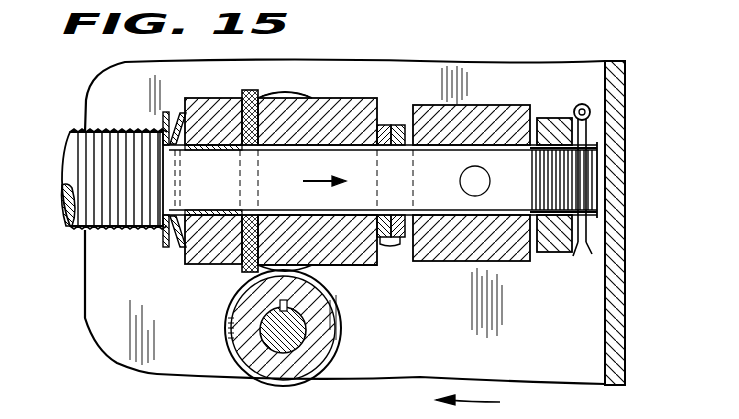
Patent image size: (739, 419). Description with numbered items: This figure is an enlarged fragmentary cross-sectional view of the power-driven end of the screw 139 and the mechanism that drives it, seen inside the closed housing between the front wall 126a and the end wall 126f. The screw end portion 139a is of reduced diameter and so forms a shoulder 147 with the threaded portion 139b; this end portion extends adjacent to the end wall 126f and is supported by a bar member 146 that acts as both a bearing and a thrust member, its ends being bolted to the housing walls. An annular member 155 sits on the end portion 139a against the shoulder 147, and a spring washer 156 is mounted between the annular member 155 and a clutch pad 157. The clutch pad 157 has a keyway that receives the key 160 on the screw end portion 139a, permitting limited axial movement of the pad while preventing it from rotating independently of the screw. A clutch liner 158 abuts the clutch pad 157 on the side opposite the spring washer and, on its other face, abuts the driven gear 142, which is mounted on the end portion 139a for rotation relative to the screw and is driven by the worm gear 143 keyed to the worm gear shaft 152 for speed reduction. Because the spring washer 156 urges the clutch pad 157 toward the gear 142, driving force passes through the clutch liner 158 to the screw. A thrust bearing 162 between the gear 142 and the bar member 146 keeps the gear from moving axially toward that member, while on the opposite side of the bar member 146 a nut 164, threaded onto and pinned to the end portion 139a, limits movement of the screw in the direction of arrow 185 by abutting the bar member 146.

The front wall 126a is at (571, 352).
The end wall 126f is at (613, 320).
The screw 139 is at (96, 149).
The screw end portion 139a is at (503, 162).
The threaded portion 139b is at (72, 232).
The gear 142 is at (310, 88).
The worm gear 143 is at (340, 299).
The bar member 146 is at (454, 106).
The shoulder 147 is at (148, 232).
The worm gear shaft 152 is at (306, 334).
The annular member 155 is at (167, 240).
The spring washer 156 is at (176, 114).
The clutch pad 157 is at (208, 98).
The clutch liner 158 is at (234, 266).
The key 160 is at (201, 150).
The thrust bearing 162 is at (397, 246).
The nut 164 is at (559, 254).
The arrow 185 is at (484, 404).